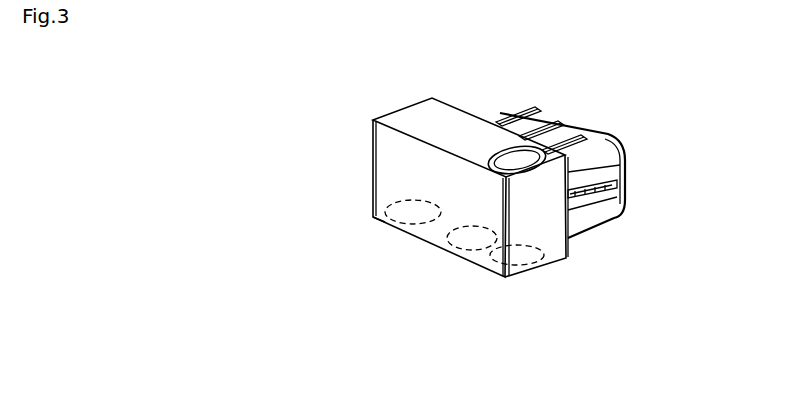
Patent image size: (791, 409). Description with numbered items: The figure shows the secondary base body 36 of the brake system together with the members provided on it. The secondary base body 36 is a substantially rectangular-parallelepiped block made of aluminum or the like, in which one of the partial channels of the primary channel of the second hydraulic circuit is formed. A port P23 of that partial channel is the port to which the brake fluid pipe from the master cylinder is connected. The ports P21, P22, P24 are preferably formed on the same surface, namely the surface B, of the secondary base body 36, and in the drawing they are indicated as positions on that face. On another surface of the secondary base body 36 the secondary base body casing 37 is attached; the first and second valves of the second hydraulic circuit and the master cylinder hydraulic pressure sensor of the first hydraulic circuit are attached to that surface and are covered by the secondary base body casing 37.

The secondary base body 36 is at (397, 172).
The secondary base body casing 37 is at (608, 212).
The surface B is at (382, 222).
The port P21 is at (527, 267).
The port P22 is at (468, 258).
The port P23 is at (518, 151).
The port P24 is at (410, 225).